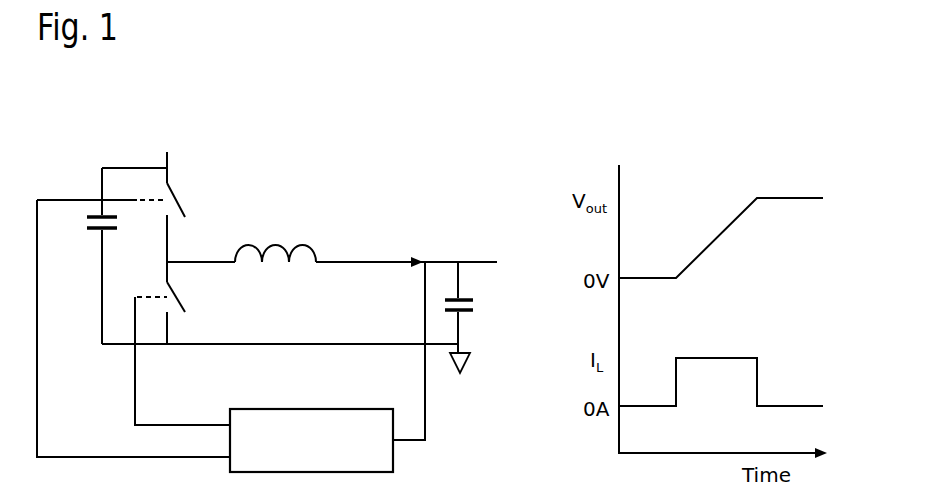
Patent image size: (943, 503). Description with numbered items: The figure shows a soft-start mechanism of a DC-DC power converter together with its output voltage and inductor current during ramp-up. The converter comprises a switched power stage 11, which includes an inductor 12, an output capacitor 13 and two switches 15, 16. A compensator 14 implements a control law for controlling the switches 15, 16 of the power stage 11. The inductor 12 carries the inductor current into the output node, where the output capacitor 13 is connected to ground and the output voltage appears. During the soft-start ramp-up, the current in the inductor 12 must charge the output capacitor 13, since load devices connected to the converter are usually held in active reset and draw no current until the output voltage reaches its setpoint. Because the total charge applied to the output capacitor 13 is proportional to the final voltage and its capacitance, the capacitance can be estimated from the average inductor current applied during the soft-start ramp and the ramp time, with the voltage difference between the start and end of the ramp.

The switched power stage 11 is at (130, 144).
The inductor 12 is at (280, 232).
The output capacitor 13 is at (486, 306).
The compensator 14 is at (403, 456).
The switch 15 is at (181, 185).
The switch 16 is at (190, 306).